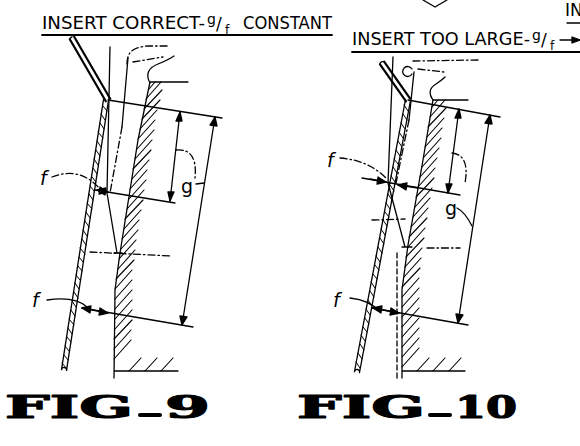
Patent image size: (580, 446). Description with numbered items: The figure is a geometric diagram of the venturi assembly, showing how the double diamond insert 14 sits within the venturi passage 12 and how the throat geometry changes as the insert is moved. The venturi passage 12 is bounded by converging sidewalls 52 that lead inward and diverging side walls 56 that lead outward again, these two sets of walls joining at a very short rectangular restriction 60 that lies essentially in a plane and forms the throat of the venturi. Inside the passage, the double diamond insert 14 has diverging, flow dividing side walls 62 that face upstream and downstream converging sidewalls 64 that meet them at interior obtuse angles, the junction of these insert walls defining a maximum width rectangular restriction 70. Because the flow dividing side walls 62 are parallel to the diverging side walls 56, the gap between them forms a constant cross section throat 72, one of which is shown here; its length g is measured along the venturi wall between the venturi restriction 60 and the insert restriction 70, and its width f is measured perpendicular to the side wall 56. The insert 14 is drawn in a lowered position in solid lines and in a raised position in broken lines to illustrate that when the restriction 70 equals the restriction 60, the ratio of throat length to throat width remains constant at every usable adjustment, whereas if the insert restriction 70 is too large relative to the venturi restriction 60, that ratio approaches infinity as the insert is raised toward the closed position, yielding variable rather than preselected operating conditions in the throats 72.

In FIG. 9, the venturi passage 12 is at (82, 82).
In FIG. 10, the venturi passage 12 is at (383, 95).
In FIG. 9, the double diamond insert 14 is at (183, 88).
In FIG. 10, the double diamond insert 14 is at (468, 95).
In FIG. 9, the converging sidewalls 52 is at (85, 67).
In FIG. 10, the converging sidewalls 52 is at (386, 78).
In FIG. 9, the diverging side walls 56 is at (76, 279).
In FIG. 10, the diverging side walls 56 is at (371, 263).
In FIG. 9, the rectangular restriction 60 is at (107, 100).
In FIG. 10, the rectangular restriction 60 is at (405, 102).
In FIG. 9, the flow dividing side walls 62 is at (160, 60).
In FIG. 10, the flow dividing side walls 62 is at (440, 80).
In FIG. 9, the downstream converging sidewalls 64 is at (84, 256).
In FIG. 10, the downstream converging sidewalls 64 is at (372, 220).
In FIG. 9, the rectangular restriction 70 is at (88, 208).
In FIG. 10, the rectangular restriction 70 is at (383, 196).
In FIG. 9, the throat 72 is at (92, 231).
In FIG. 10, the throat 72 is at (387, 241).